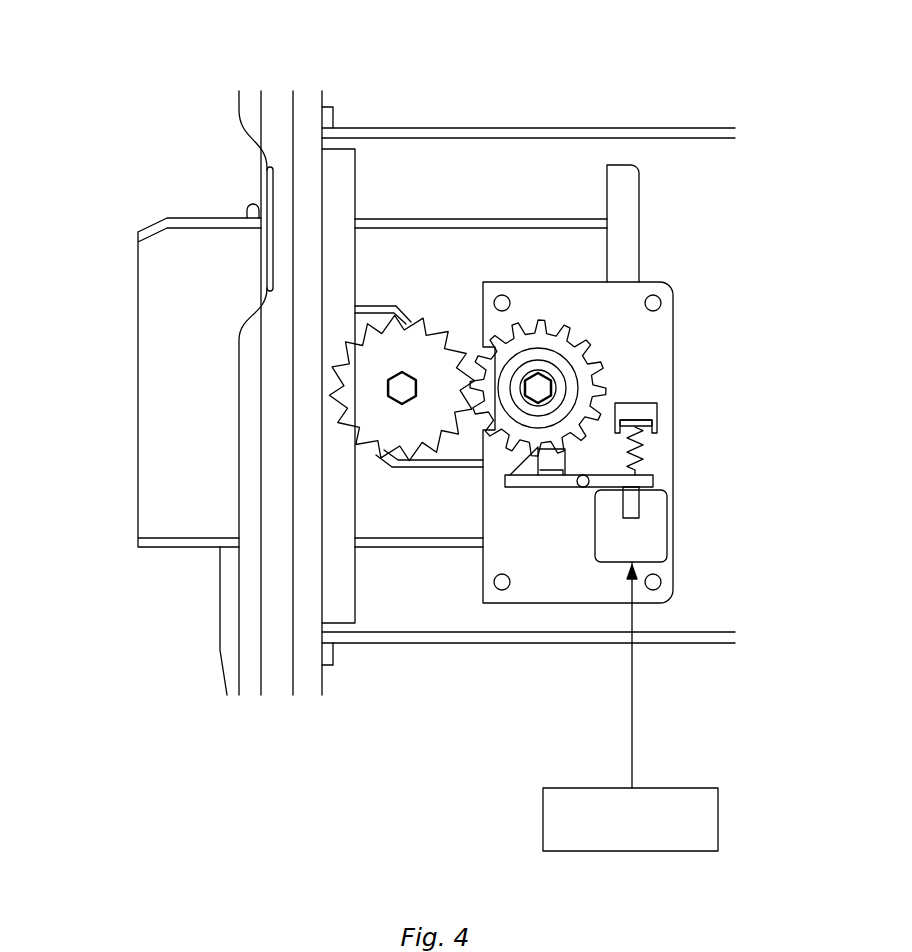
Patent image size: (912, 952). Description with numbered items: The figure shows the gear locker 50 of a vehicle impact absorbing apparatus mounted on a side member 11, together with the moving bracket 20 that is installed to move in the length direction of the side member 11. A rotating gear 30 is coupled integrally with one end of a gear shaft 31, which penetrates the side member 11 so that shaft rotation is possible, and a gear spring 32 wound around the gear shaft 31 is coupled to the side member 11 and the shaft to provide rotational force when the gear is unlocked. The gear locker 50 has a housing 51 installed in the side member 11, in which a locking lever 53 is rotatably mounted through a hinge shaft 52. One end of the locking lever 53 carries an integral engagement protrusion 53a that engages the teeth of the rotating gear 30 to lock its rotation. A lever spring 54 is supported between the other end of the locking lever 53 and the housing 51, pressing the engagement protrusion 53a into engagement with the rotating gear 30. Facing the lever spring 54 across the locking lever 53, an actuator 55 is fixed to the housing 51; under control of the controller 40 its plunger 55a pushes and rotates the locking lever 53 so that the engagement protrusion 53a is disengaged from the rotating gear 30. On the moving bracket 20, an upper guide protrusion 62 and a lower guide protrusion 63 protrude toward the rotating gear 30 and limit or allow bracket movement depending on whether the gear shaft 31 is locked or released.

The side member 11 is at (688, 132).
The moving bracket 20 is at (152, 340).
The rotating gear 30 is at (580, 342).
The gear shaft 31 is at (540, 387).
The gear spring 32 is at (538, 380).
The controller 40 is at (718, 818).
The gear locker 50 is at (632, 462).
The housing 51 is at (617, 298).
The hinge shaft 52 is at (583, 487).
The locking lever 53 is at (547, 487).
The engagement protrusion 53a is at (523, 468).
The lever spring 54 is at (643, 450).
The actuator 55 is at (693, 517).
The plunger 55a is at (637, 507).
The upper guide protrusion 62 is at (378, 302).
The lower guide protrusion 63 is at (413, 470).